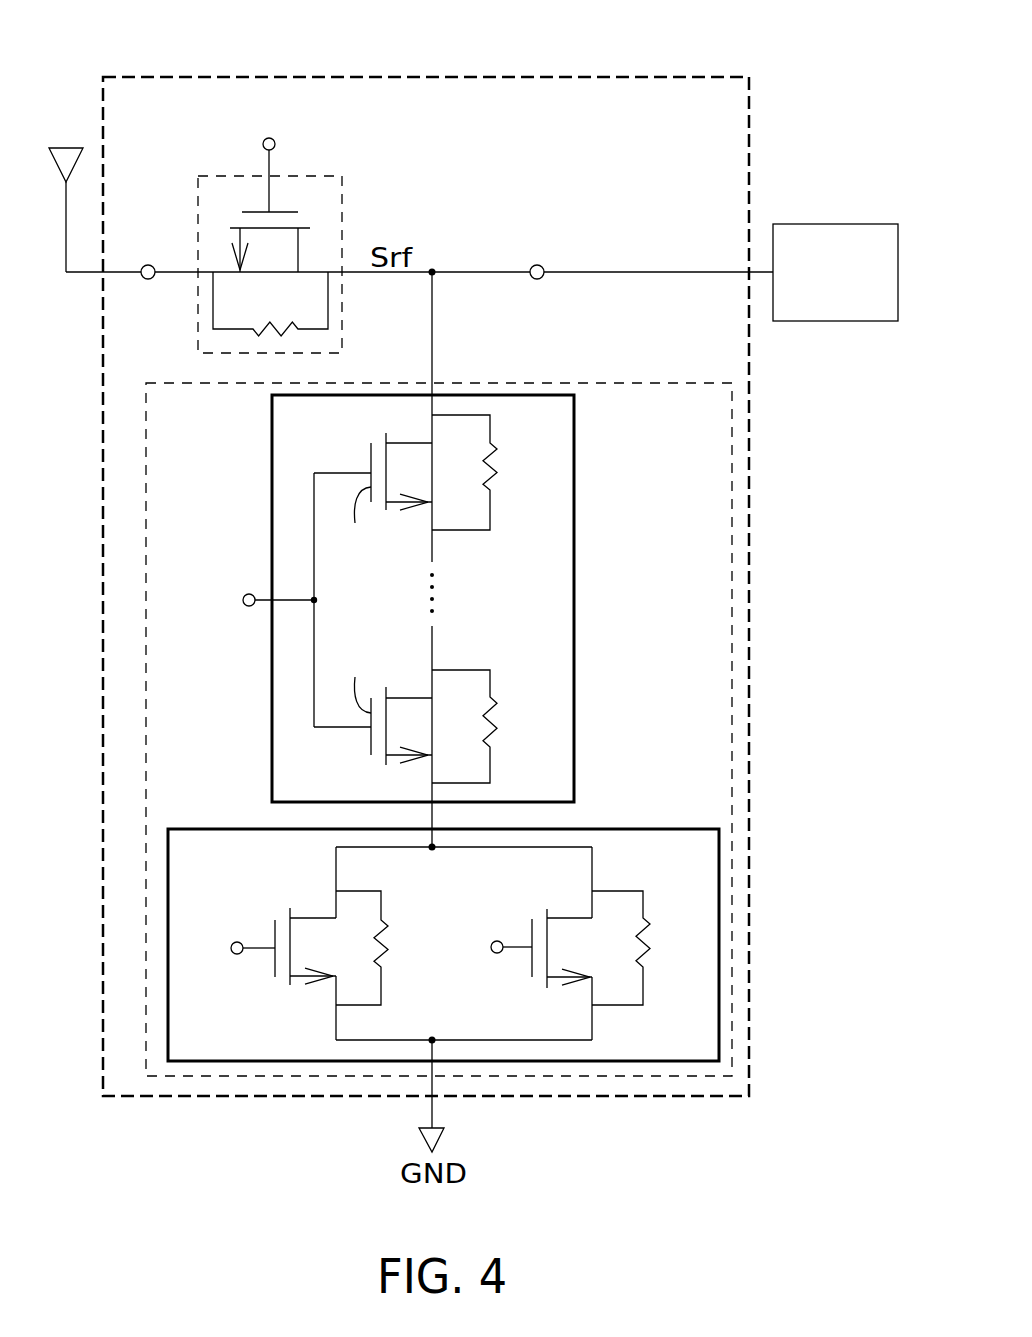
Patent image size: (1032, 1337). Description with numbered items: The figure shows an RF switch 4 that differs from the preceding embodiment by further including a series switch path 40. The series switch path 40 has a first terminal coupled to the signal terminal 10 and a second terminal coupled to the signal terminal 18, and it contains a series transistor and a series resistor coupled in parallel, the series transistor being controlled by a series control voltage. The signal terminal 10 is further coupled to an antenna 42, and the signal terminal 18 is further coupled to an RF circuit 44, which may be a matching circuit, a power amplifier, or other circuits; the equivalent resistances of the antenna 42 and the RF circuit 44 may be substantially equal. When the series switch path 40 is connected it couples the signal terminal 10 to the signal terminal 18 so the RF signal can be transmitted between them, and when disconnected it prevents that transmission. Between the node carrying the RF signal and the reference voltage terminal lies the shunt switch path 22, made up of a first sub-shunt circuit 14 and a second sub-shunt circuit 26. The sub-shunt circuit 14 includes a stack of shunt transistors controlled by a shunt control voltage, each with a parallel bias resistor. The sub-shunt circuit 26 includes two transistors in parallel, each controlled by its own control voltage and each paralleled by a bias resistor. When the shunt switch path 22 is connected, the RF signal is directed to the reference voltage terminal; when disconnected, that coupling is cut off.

The RF switch 4 is at (418, 77).
The signal terminal 10 is at (148, 265).
The sub-shunt circuit 14 is at (574, 600).
The signal terminal 18 is at (537, 265).
The shunt switch path 22 is at (732, 692).
The sub-shunt circuit 26 is at (719, 909).
The series switch path 40 is at (342, 183).
The antenna 42 is at (66, 148).
The RF circuit 44 is at (835, 224).